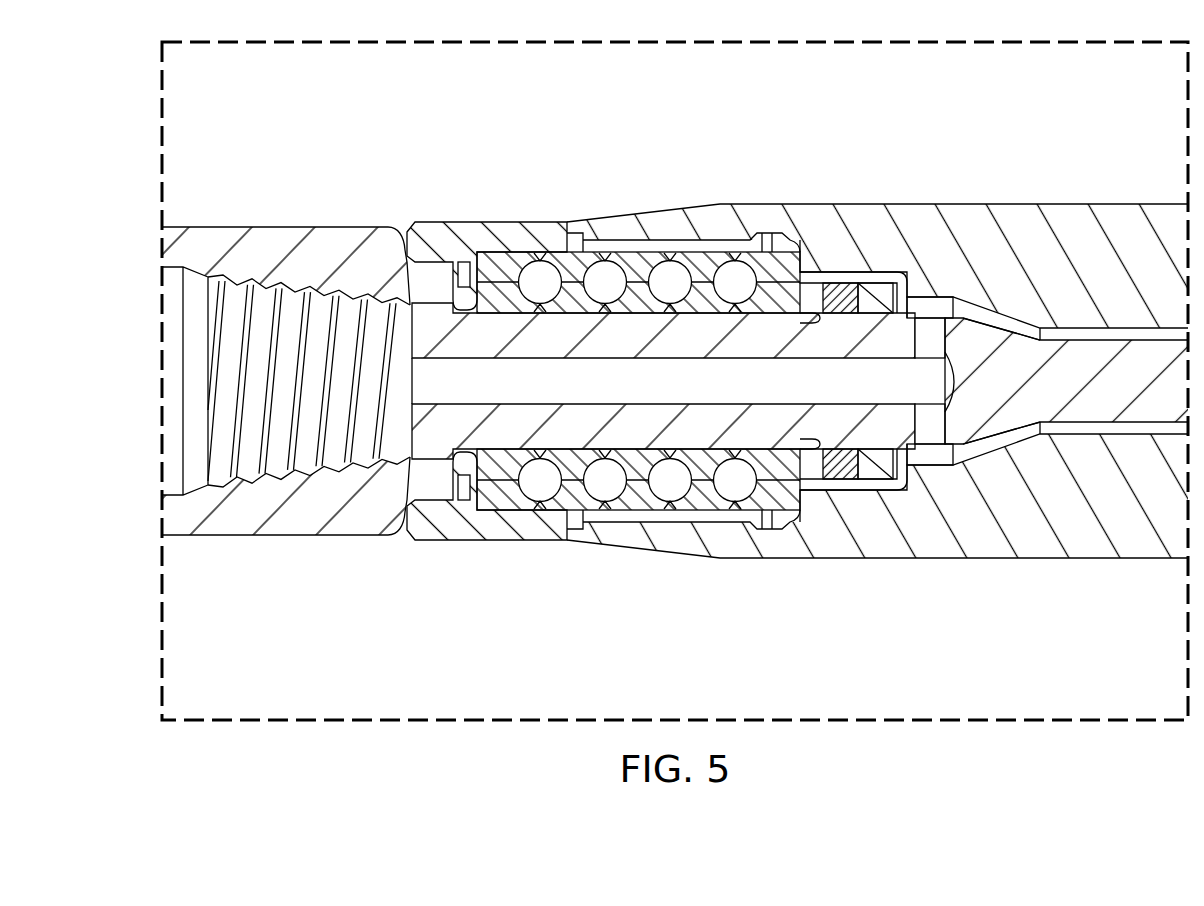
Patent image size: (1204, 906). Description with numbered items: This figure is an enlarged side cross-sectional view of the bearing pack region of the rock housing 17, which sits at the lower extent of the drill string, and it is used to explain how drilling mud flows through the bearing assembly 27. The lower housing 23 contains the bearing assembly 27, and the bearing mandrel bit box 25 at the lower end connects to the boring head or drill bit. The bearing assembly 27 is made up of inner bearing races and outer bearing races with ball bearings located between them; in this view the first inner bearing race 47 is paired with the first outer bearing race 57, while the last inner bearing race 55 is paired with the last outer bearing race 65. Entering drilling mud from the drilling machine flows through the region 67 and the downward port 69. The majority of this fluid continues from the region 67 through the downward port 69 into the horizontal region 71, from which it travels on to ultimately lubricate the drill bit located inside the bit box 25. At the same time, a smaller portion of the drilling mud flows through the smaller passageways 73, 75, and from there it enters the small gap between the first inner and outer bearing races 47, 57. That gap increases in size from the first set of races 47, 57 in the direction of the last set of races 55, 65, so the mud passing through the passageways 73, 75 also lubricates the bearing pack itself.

The rock housing 17 is at (1034, 168).
The bearing mandrel bit box 25 is at (276, 238).
The lower housing 23 is at (497, 232).
The bearing assembly 27 is at (622, 233).
The smaller passageway 73 is at (846, 272).
The downward port 69 is at (923, 305).
The region 67 is at (1094, 332).
The horizontal region 71 is at (647, 357).
The inner bearing race 55 is at (503, 462).
The inner bearing race 47 is at (766, 458).
The outer bearing race 65 is at (505, 498).
The outer bearing race 57 is at (762, 530).
The smaller passageway 75 is at (848, 492).